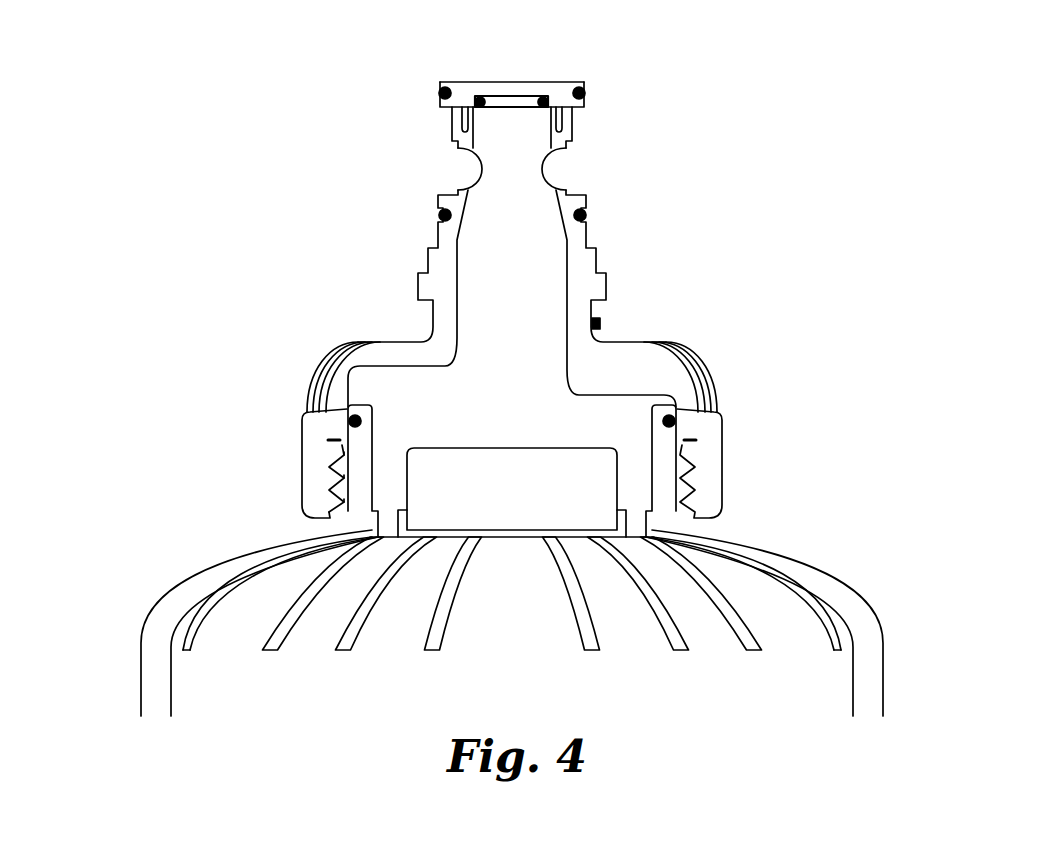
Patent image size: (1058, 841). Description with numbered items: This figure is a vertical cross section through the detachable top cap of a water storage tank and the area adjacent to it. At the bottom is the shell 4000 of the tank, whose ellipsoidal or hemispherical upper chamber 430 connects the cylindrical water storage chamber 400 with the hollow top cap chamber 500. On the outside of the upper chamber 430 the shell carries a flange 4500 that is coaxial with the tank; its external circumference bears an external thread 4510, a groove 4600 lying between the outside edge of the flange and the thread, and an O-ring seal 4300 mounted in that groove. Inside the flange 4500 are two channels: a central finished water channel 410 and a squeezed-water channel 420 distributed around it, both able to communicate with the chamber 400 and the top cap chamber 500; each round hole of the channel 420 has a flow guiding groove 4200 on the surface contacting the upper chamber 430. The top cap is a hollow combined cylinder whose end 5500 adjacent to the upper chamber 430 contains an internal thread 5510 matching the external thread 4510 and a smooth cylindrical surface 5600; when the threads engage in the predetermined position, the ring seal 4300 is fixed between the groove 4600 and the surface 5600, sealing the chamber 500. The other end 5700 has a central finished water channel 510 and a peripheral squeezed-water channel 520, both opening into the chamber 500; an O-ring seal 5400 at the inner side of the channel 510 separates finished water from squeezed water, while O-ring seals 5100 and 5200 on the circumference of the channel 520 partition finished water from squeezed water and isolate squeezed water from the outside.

The water storage chamber 400 is at (832, 690).
The channel 410 is at (563, 493).
The channel 420 is at (637, 507).
The upper chamber 430 is at (793, 635).
The top cap chamber 500 is at (531, 327).
The finished water channel 510 is at (516, 80).
The squeezed-water channel 520 is at (462, 167).
The shell of the water storage tank 4000 is at (503, 623).
The flow guiding groove 4200 is at (727, 593).
The O-ring seal 4300 is at (680, 428).
The flange 4500 is at (670, 411).
The external thread 4510 is at (336, 455).
The groove 4600 is at (351, 412).
The O-ring seal 5100 is at (586, 94).
The O-ring seal 5200 is at (587, 215).
The O-ring seal 5400 is at (528, 108).
The end of the top cap 5500 is at (308, 511).
The internal thread 5510 is at (330, 490).
The smooth cylindrical surface 5600 is at (345, 428).
The other end of the top cap 5700 is at (439, 90).